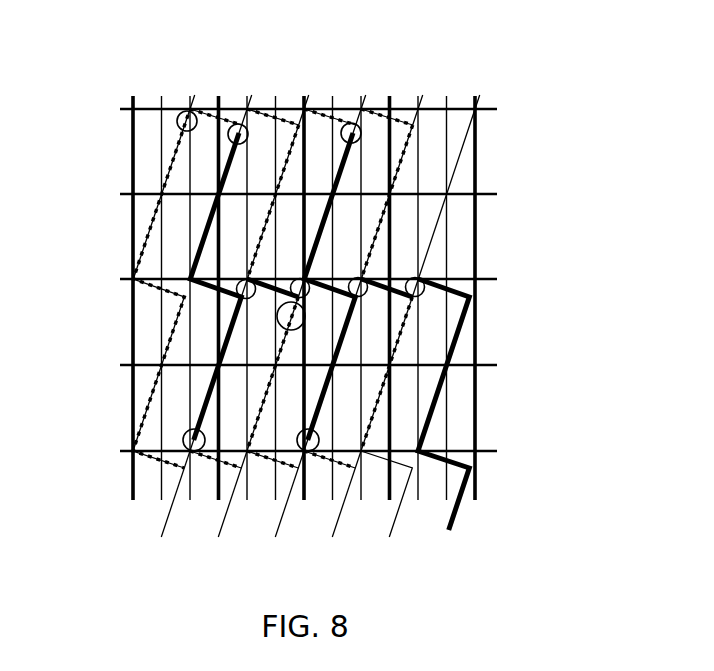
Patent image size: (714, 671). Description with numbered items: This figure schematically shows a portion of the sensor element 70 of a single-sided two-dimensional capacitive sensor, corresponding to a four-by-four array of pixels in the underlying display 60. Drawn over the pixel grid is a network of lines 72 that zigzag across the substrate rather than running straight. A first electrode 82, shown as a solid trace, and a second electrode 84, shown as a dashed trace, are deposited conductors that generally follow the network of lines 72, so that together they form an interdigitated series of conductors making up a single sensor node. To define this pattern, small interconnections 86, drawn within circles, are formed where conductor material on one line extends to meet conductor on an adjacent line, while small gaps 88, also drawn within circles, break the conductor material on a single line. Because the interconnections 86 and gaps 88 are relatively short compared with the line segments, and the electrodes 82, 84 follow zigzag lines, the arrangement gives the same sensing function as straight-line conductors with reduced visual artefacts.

The underlying display 60 is at (477, 166).
The sensor element 70 is at (545, 204).
The network of lines 72 is at (422, 97).
The first electrode 82 is at (446, 396).
The second electrode 84 is at (145, 239).
The interconnections 86 is at (186, 111).
The gaps 88 is at (235, 124).